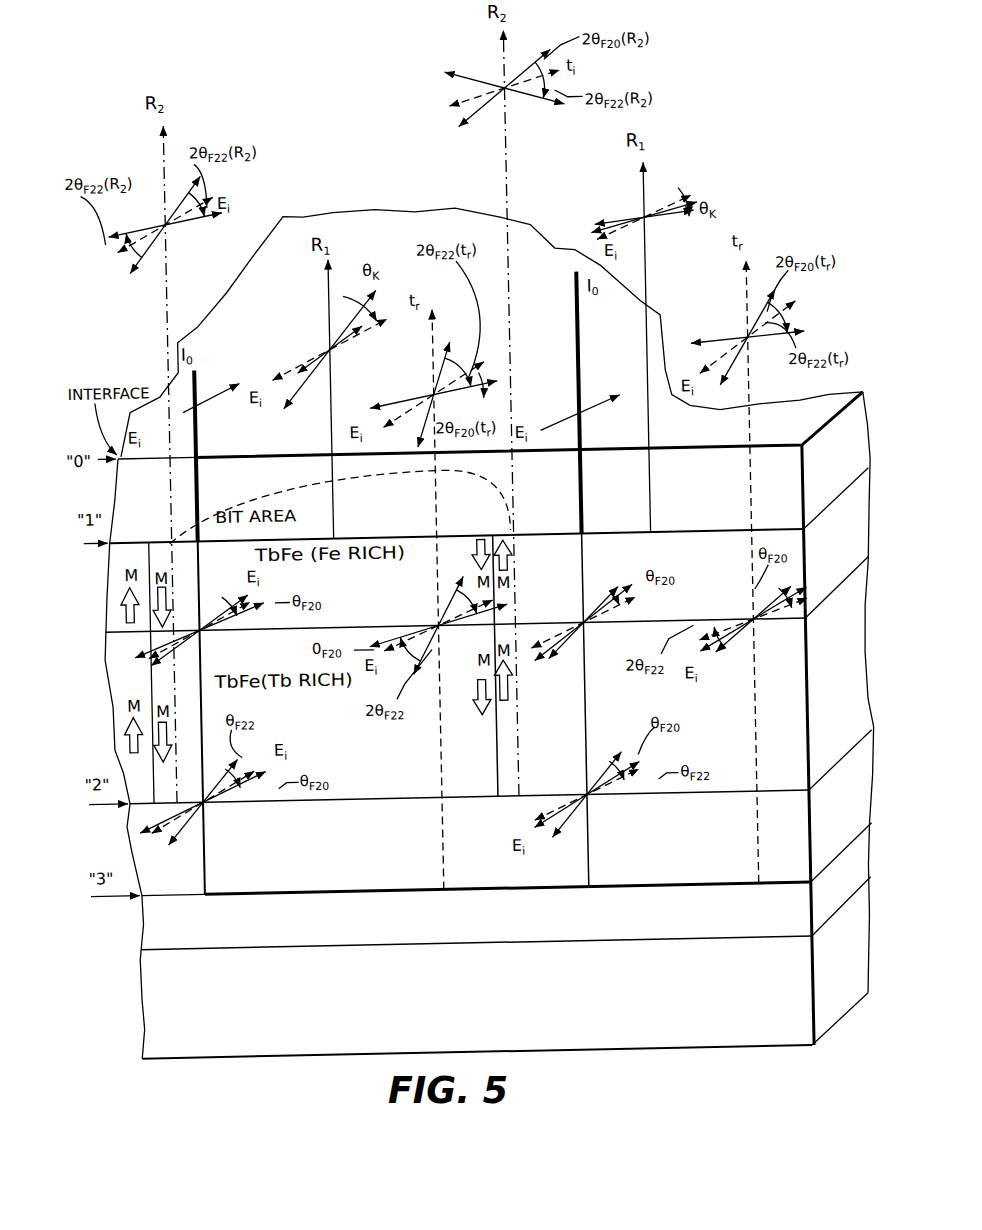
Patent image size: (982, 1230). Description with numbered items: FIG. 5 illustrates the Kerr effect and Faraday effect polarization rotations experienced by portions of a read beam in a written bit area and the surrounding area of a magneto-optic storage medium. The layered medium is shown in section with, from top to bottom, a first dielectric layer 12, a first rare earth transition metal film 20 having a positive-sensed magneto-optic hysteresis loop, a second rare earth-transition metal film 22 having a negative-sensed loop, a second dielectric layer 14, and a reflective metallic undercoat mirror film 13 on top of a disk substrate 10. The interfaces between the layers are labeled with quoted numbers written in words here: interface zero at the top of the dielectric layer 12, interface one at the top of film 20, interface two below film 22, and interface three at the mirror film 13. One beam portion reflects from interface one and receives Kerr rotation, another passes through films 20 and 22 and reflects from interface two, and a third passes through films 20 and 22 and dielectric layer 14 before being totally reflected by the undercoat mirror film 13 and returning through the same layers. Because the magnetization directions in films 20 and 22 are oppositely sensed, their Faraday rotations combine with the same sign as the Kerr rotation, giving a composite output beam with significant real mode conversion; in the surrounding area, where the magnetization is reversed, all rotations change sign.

The disk substrate 10 is at (806, 1003).
The first dielectric layer 12 is at (804, 493).
The reflective metallic undercoat mirror film 13 is at (806, 917).
The second dielectric layer 14 is at (806, 834).
The first rare earth transition metal film 20 is at (806, 559).
The second rare earth-transition metal film 22 is at (806, 739).